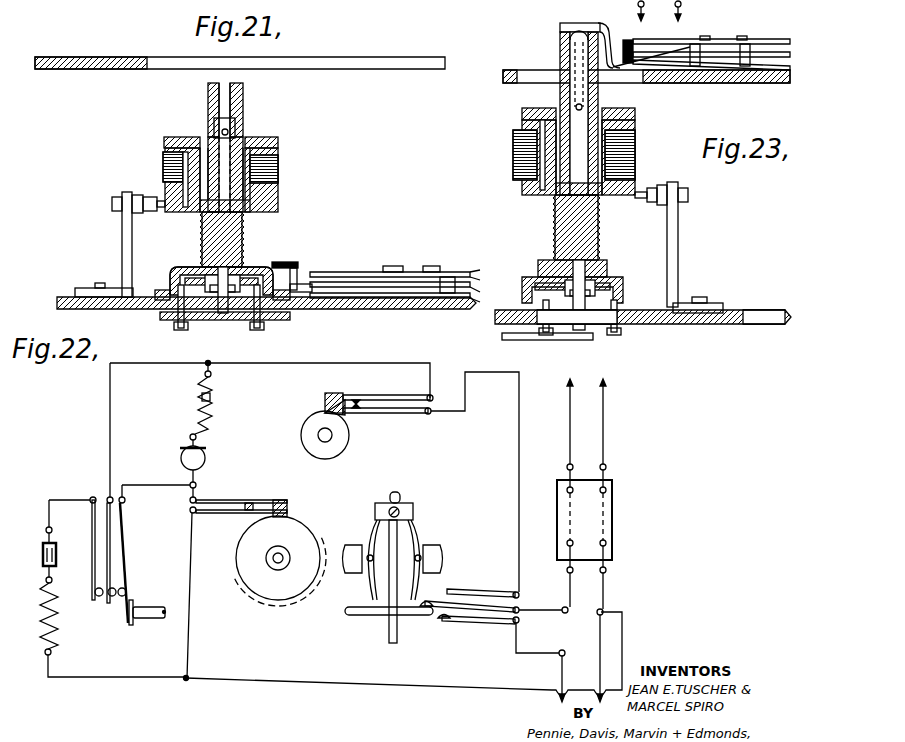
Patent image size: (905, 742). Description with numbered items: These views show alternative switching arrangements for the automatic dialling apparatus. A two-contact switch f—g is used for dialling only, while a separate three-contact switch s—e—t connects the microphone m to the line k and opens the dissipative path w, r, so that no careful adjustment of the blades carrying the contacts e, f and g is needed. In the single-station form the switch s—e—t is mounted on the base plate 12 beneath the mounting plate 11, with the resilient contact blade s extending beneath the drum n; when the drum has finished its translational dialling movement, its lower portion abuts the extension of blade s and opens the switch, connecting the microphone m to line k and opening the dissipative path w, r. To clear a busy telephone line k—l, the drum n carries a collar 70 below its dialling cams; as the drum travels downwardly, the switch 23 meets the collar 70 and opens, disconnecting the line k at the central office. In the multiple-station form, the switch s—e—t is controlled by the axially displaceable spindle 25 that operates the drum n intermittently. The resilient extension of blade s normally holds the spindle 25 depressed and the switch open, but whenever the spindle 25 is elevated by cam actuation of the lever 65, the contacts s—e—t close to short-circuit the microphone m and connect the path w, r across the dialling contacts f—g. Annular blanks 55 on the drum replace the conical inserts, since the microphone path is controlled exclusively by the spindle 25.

In FIG. 21, the mounting plate 11 is at (357, 72).
In FIG. 23, the mounting plate 11 is at (712, 87).
In FIG. 21, the base plate 12 is at (378, 312).
In FIG. 21, the switch 23 is at (165, 212).
In FIG. 22, the switch 23 is at (281, 502).
In FIG. 23, the switch 23 is at (637, 202).
In FIG. 22, the axially displaceable spindle 25 is at (147, 618).
In FIG. 23, the axially displaceable spindle 25 is at (582, 118).
In FIG. 23, the annular blanks 55 is at (573, 151).
In FIG. 23, the lever 65 is at (540, 340).
In FIG. 21, the collar 70 is at (254, 175).
In FIG. 21, the drum n is at (278, 190).
In FIG. 22, the drum n is at (302, 518).
In FIG. 23, the drum n is at (520, 157).
In FIG. 21, the dialling contact f is at (137, 192).
In FIG. 22, the dialling contact f is at (249, 503).
In FIG. 23, the dialling contact f is at (670, 178).
In FIG. 21, the dialling contact g is at (150, 197).
In FIG. 22, the dialling contact g is at (248, 516).
In FIG. 23, the dialling contact g is at (655, 203).
In FIG. 21, the switch contact e is at (327, 277).
In FIG. 22, the switch contact e is at (108, 530).
In FIG. 23, the switch contact e is at (643, 58).
In FIG. 21, the switch contact t is at (350, 273).
In FIG. 22, the switch contact t is at (92, 557).
In FIG. 23, the switch contact t is at (670, 46).
In FIG. 21, the resilient contact blade s is at (323, 297).
In FIG. 22, the resilient contact blade s is at (129, 538).
In FIG. 23, the resilient contact blade s is at (653, 67).
In FIG. 22, the microphone m is at (207, 462).
In FIG. 22, the dissipative path element w is at (41, 553).
In FIG. 22, the dissipative path element r is at (38, 620).
In FIG. 22, the line k is at (584, 488).
In FIG. 22, the line conductor l is at (581, 658).